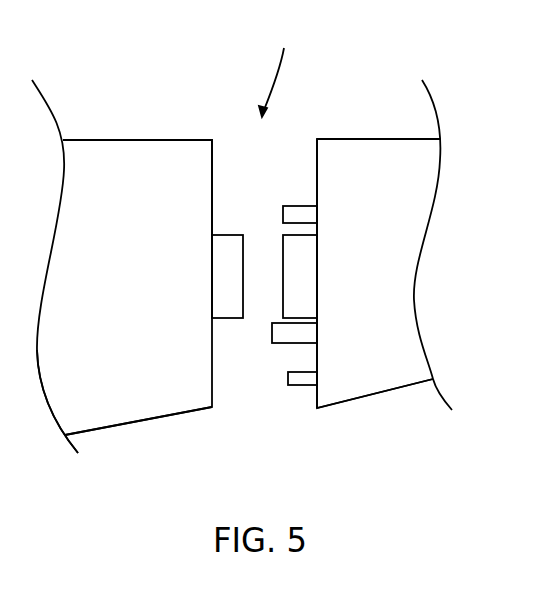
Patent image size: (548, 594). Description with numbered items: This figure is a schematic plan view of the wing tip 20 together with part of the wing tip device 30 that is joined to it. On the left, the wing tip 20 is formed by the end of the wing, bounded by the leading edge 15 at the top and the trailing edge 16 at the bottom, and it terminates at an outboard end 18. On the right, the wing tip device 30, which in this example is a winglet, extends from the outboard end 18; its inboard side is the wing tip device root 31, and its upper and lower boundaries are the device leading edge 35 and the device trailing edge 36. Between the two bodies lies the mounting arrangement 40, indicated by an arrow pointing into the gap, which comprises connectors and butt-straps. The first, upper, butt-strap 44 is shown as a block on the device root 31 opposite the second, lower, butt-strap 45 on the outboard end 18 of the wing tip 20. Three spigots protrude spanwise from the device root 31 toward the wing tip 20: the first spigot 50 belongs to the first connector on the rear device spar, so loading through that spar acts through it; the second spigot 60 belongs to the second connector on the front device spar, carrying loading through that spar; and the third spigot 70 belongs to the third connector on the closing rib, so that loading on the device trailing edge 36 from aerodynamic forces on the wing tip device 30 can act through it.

The leading edge 15 is at (107, 139).
The trailing edge 16 is at (152, 422).
The outboard end 18 is at (202, 145).
The wing tip 20 is at (96, 412).
The wing tip device 30 is at (385, 378).
The wing tip device root 31 is at (334, 152).
The device leading edge 35 is at (377, 138).
The device trailing edge 36 is at (342, 405).
The mounting arrangement 40 is at (278, 69).
The first, upper, butt-strap 44 is at (306, 287).
The second, lower, butt-strap 45 is at (222, 248).
The first spigot 50 is at (304, 383).
The second spigot 60 is at (285, 331).
The third spigot 70 is at (300, 216).